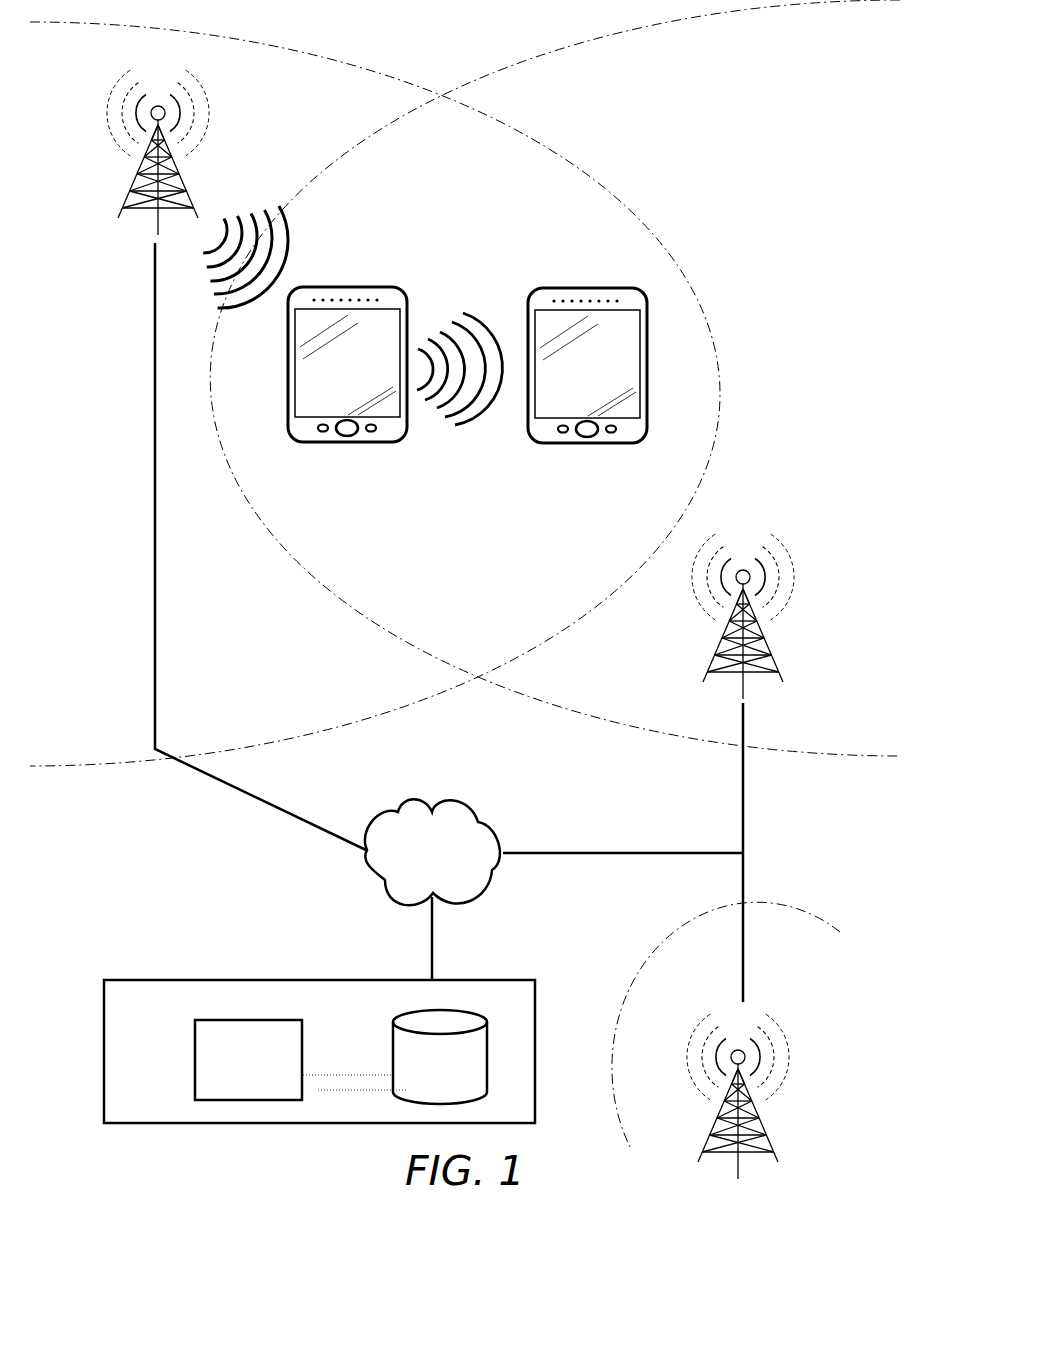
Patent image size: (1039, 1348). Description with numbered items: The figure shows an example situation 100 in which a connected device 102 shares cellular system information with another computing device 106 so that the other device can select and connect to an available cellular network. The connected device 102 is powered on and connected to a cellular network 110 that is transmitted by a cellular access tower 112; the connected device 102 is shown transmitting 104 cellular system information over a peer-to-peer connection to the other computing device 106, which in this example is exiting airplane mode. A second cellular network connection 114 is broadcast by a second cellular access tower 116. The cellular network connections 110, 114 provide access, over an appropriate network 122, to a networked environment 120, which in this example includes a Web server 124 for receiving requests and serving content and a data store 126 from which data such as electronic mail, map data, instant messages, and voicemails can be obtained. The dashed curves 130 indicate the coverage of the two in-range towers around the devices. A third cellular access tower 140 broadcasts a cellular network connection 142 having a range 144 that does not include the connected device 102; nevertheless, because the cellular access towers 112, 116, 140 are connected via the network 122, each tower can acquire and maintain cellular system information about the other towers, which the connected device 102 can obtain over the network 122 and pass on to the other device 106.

The situation 100 is at (784, 63).
The connected device 102 is at (317, 443).
The transmitting 104 is at (442, 310).
The computing device 106 is at (550, 444).
The cellular network 110 is at (114, 90).
The cellular access tower 112 is at (105, 203).
The cellular network connection 114 is at (790, 550).
The cellular access tower 116 is at (798, 673).
The networked environment 120 is at (153, 982).
The network 122 is at (370, 868).
The Web server 124 is at (192, 1057).
The data store 126 is at (392, 1058).
The coverage areas 130 is at (338, 133).
The third cellular access tower 140 is at (800, 1153).
The cellular network connection 142 is at (792, 1017).
The range 144 is at (612, 1113).